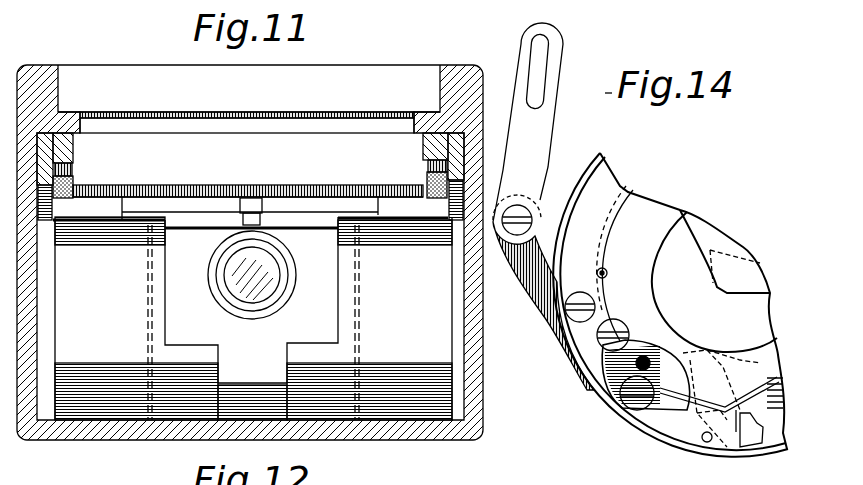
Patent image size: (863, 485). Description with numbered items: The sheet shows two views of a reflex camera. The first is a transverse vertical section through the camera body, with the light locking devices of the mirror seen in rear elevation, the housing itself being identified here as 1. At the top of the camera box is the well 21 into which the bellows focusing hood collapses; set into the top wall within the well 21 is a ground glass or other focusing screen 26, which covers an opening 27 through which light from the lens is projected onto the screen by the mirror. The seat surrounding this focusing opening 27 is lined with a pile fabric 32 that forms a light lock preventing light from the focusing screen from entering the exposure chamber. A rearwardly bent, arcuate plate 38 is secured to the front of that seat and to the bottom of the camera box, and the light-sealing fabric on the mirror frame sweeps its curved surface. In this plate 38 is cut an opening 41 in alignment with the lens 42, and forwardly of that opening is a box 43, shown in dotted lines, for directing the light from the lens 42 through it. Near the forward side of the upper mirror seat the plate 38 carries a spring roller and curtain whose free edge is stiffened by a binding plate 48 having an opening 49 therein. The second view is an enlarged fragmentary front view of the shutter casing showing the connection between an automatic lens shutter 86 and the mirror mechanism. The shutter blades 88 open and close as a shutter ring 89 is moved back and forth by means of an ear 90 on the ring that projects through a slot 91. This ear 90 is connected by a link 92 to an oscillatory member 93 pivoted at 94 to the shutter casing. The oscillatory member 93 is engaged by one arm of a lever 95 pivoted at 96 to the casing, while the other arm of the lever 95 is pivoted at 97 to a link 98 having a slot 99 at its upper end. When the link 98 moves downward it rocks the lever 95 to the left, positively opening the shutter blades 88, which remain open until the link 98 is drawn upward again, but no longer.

In FIG. 11, the casing 1 is at (449, 66).
In FIG. 11, the well 21 is at (249, 96).
In FIG. 11, the focusing screen 26 is at (327, 102).
In FIG. 11, the opening 27 is at (107, 128).
In FIG. 11, the pile fabric 32 is at (101, 190).
In FIG. 11, the rearwardly bent plate 38 is at (389, 296).
In FIG. 11, the opening 41 is at (253, 318).
In FIG. 11, the lens 42 is at (270, 268).
In FIG. 11, the box 43 is at (362, 349).
In FIG. 11, the binding plate 48 is at (298, 218).
In FIG. 11, the opening 49 is at (263, 196).
In FIG. 14, the automatic lens shutter 86 is at (606, 166).
In FIG. 14, the shutter blades 88 is at (714, 281).
In FIG. 14, the shutter ring 89 is at (721, 398).
In FIG. 14, the ear 90 is at (752, 433).
In FIG. 14, the slot 91 is at (668, 422).
In FIG. 14, the link 92 is at (673, 387).
In FIG. 14, the oscillatory member 93 is at (648, 350).
In FIG. 14, the pivot 94 is at (623, 403).
In FIG. 14, the lever 95 is at (547, 322).
In FIG. 14, the pivot 96 is at (603, 293).
In FIG. 14, the pivot 97 is at (533, 213).
In FIG. 14, the link 98 is at (547, 143).
In FIG. 14, the slot 99 is at (538, 60).